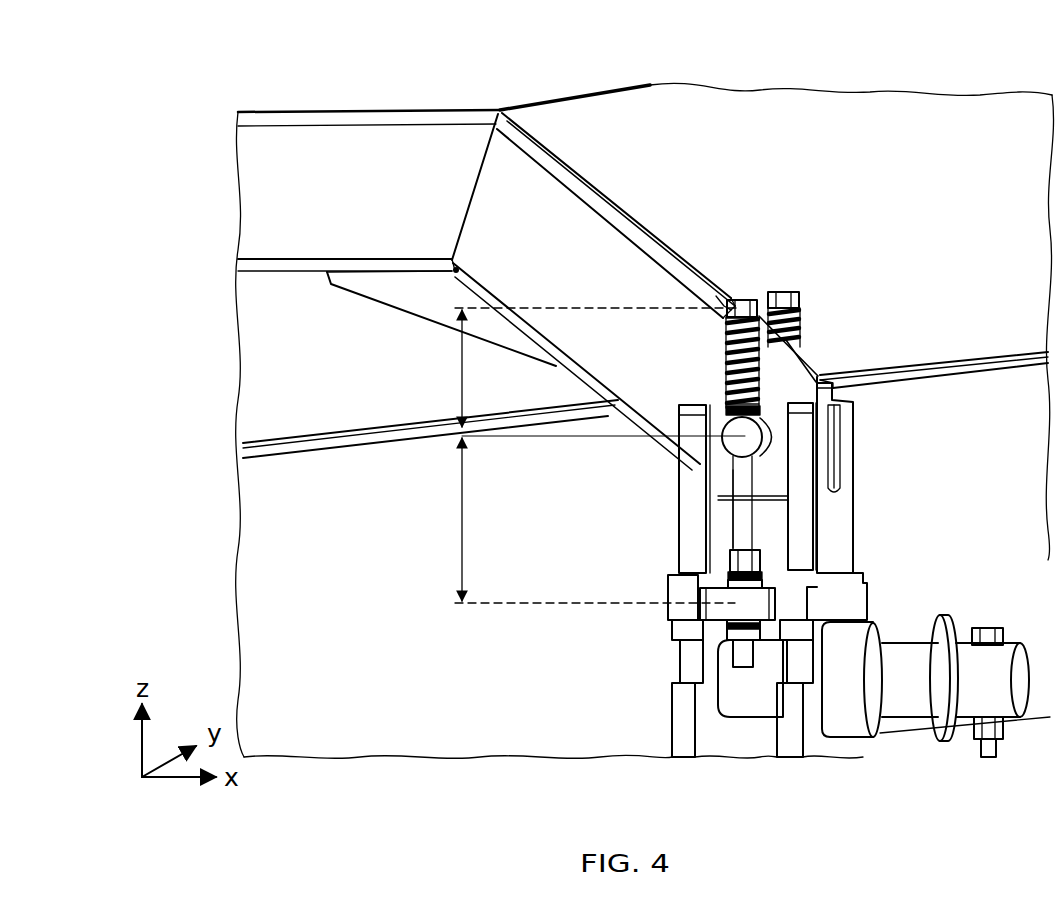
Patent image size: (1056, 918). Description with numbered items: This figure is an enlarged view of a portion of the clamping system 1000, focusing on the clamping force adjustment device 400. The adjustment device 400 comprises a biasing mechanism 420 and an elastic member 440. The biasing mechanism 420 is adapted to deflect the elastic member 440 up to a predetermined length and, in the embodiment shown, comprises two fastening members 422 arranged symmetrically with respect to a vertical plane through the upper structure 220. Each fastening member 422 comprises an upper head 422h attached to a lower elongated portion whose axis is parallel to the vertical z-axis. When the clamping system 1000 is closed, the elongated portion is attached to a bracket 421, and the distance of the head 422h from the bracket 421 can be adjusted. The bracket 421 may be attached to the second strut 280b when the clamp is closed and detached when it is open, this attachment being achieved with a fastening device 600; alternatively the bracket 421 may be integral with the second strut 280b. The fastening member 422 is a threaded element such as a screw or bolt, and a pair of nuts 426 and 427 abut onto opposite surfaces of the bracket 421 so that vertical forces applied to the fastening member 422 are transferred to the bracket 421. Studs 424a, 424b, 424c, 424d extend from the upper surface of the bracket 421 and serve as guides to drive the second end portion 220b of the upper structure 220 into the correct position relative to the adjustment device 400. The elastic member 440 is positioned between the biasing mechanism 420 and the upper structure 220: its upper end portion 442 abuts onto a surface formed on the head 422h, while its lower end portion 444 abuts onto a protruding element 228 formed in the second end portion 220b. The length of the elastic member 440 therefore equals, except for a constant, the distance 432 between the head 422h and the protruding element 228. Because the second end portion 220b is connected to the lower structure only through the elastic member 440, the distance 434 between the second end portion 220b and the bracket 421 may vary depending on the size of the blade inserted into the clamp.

The clamping system 1000 is at (350, 86).
The upper structure 220 is at (302, 197).
The second end portion 220b is at (553, 222).
The upper head 422h is at (716, 298).
The fastening member 422 is at (743, 292).
The elastic member 440 is at (808, 316).
The biasing mechanism 420 is at (851, 302).
The clamping force adjustment device 400 is at (882, 354).
The upper end portion 442 is at (716, 333).
The lower end portion 444 is at (716, 388).
The distance 432 is at (591, 367).
The distance 434 is at (594, 519).
The protruding element 228 is at (728, 497).
The stud 424a is at (678, 500).
The stud 424d is at (722, 520).
The nut 426 is at (730, 558).
The bracket 421 is at (735, 603).
The nut 427 is at (715, 650).
The stud 424b is at (818, 530).
The stud 424c is at (848, 455).
The second strut 280b is at (832, 748).
The fastening device 600 is at (902, 748).